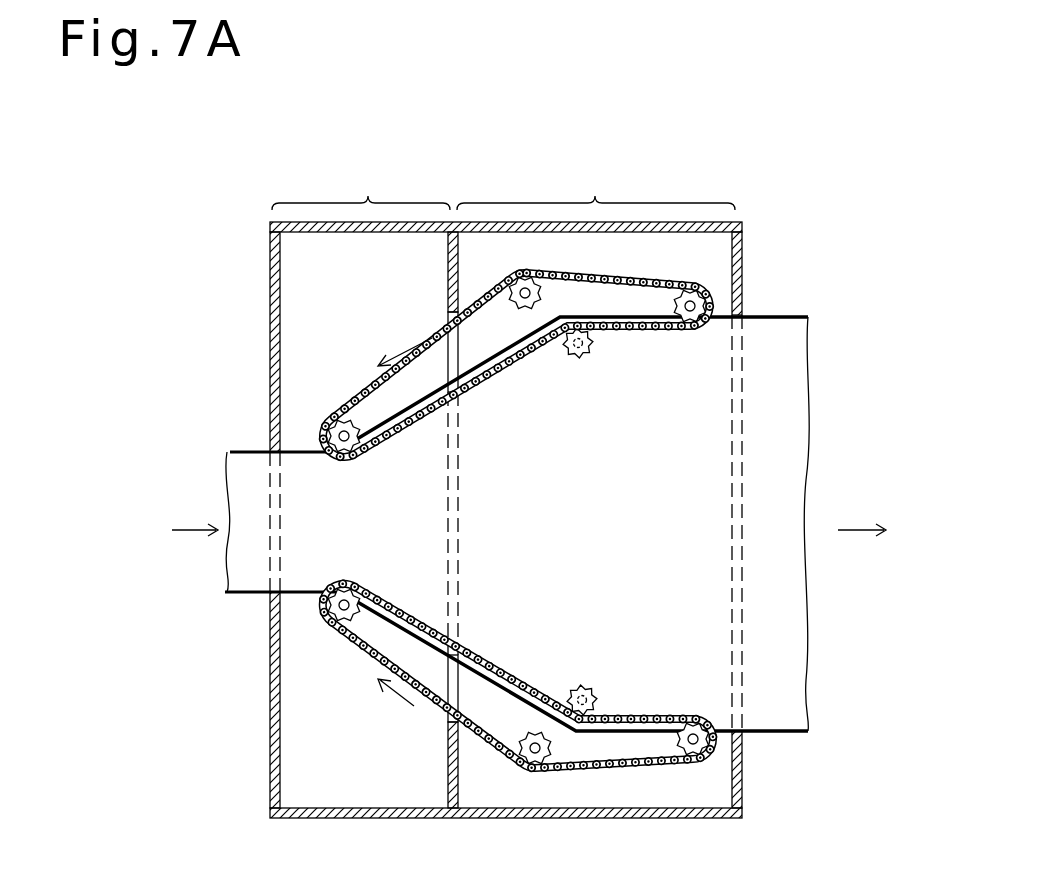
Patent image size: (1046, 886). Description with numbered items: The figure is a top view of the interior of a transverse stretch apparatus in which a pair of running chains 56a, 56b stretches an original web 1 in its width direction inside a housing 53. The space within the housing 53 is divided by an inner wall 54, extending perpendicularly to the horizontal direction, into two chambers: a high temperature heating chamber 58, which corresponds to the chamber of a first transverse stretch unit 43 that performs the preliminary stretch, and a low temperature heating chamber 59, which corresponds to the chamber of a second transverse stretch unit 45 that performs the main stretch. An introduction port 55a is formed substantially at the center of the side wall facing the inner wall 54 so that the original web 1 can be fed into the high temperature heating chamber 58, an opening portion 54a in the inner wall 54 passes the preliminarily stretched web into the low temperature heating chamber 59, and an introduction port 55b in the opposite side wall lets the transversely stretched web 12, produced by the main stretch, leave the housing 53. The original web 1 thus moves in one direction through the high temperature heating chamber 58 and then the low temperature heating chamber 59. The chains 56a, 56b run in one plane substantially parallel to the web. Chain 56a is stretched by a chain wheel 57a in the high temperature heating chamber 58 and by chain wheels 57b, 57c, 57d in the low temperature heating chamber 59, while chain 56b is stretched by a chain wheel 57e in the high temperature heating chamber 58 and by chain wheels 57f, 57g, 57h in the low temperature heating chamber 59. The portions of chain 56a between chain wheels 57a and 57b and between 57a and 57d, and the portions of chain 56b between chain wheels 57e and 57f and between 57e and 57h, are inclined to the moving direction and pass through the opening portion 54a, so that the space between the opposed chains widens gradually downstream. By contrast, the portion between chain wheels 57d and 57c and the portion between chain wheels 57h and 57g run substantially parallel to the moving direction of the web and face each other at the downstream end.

The original web 1 is at (248, 577).
The transversely stretched web 12 is at (790, 440).
The first transverse stretch unit 43 is at (368, 197).
The second transverse stretch unit 45 is at (595, 196).
The housing 53 is at (316, 815).
The inner wall 54 is at (449, 755).
The opening portion 54a is at (448, 712).
The introduction port 55a is at (272, 446).
The introduction port 55b is at (740, 313).
The chain 56a is at (614, 769).
The chain 56b is at (427, 340).
The chain wheel 57a is at (343, 626).
The chain wheel 57b is at (532, 768).
The chain wheel 57c is at (694, 746).
The chain wheel 57d is at (600, 694).
The chain wheel 57e is at (333, 432).
The chain wheel 57f is at (516, 278).
The chain wheel 57g is at (706, 288).
The chain wheel 57h is at (592, 356).
The high temperature heating chamber 58 is at (306, 252).
The low temperature heating chamber 59 is at (688, 243).